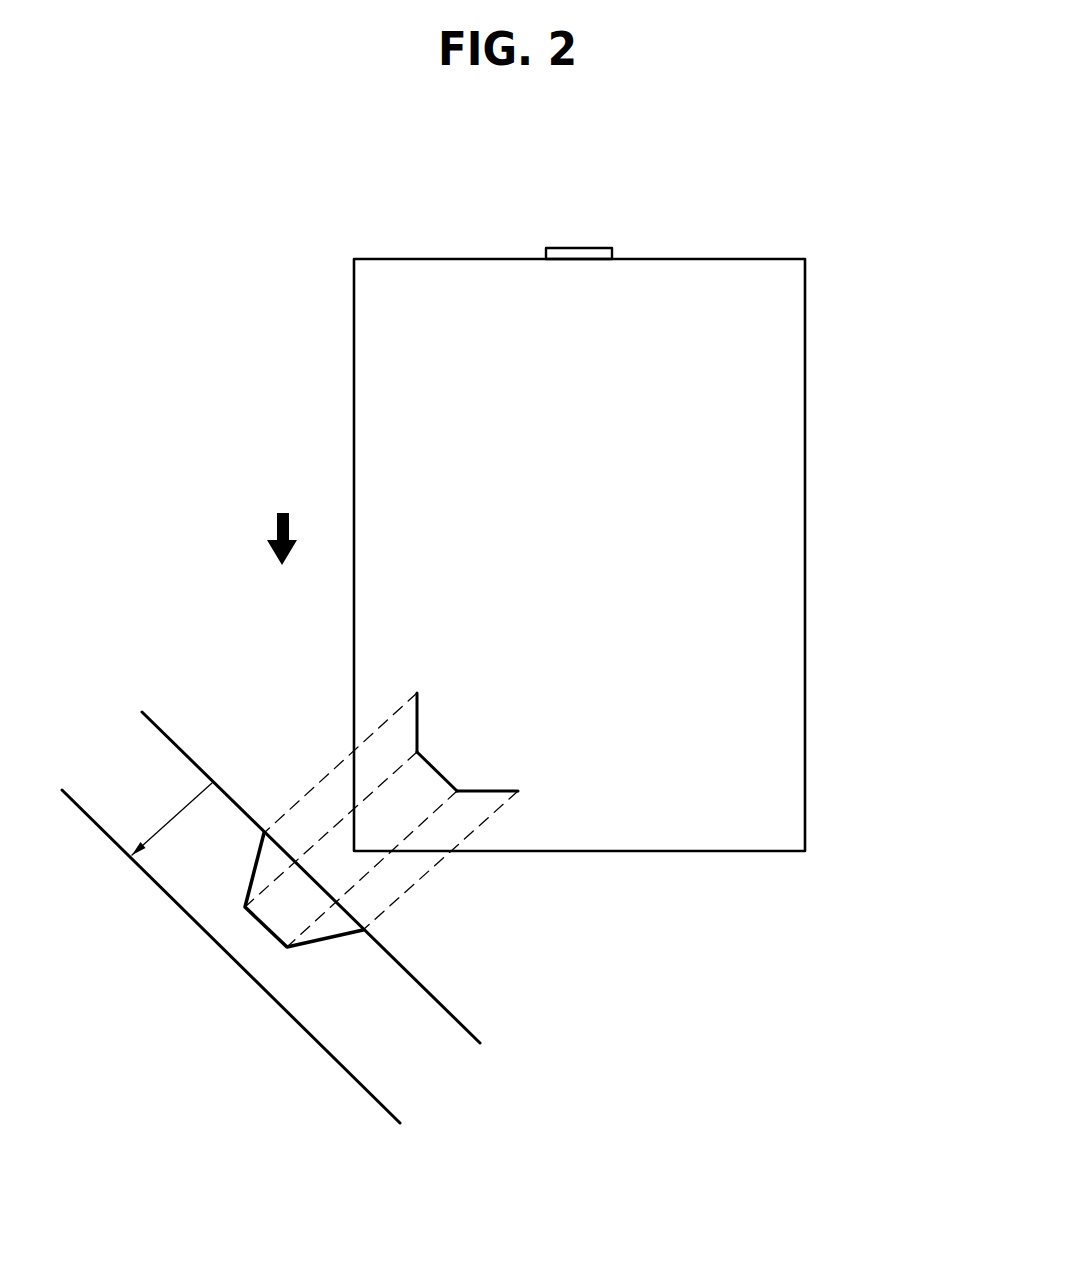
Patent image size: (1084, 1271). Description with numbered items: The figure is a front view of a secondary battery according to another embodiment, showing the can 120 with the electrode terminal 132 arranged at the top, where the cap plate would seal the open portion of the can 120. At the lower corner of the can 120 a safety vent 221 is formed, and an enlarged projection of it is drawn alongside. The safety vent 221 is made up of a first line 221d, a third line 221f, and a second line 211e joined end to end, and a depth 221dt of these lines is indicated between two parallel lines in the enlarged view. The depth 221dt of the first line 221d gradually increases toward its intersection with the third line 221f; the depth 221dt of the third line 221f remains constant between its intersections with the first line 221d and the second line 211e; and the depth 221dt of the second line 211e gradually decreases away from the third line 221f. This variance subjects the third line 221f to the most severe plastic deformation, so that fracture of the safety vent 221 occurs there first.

The can 120 is at (768, 520).
The electrode terminal 132 is at (578, 248).
The safety vent 221 is at (565, 841).
The first line 221d is at (415, 738).
The third line 221f is at (445, 782).
The notch bottom surface 211e is at (495, 791).
The depth 221dt is at (153, 812).